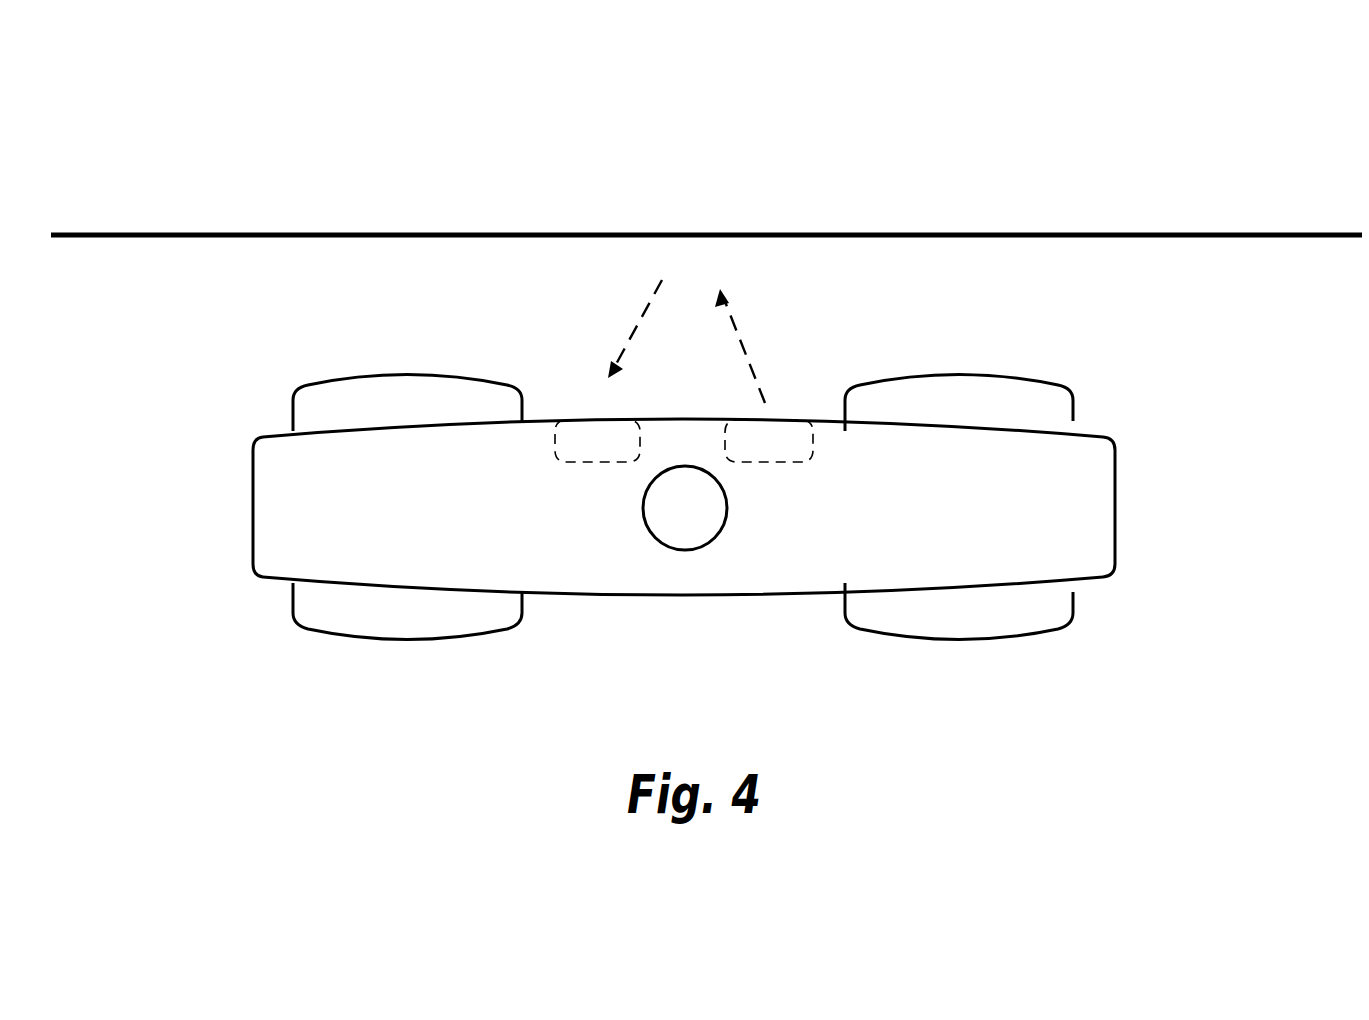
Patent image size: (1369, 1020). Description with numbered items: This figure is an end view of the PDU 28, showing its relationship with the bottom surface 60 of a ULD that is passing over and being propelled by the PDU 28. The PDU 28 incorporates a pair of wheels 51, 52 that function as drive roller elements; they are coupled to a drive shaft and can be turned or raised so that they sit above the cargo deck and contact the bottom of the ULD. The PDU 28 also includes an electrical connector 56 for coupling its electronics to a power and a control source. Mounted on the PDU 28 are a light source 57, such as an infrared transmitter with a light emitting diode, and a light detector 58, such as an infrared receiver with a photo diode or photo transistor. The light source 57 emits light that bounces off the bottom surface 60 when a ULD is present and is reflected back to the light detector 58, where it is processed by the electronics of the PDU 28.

The bottom surface 60 is at (976, 232).
The PDU 28 is at (238, 478).
The wheel 52 is at (404, 373).
The wheel 51 is at (1014, 375).
The electrical connector 56 is at (697, 530).
The light detector 58 is at (595, 437).
The light source 57 is at (788, 437).